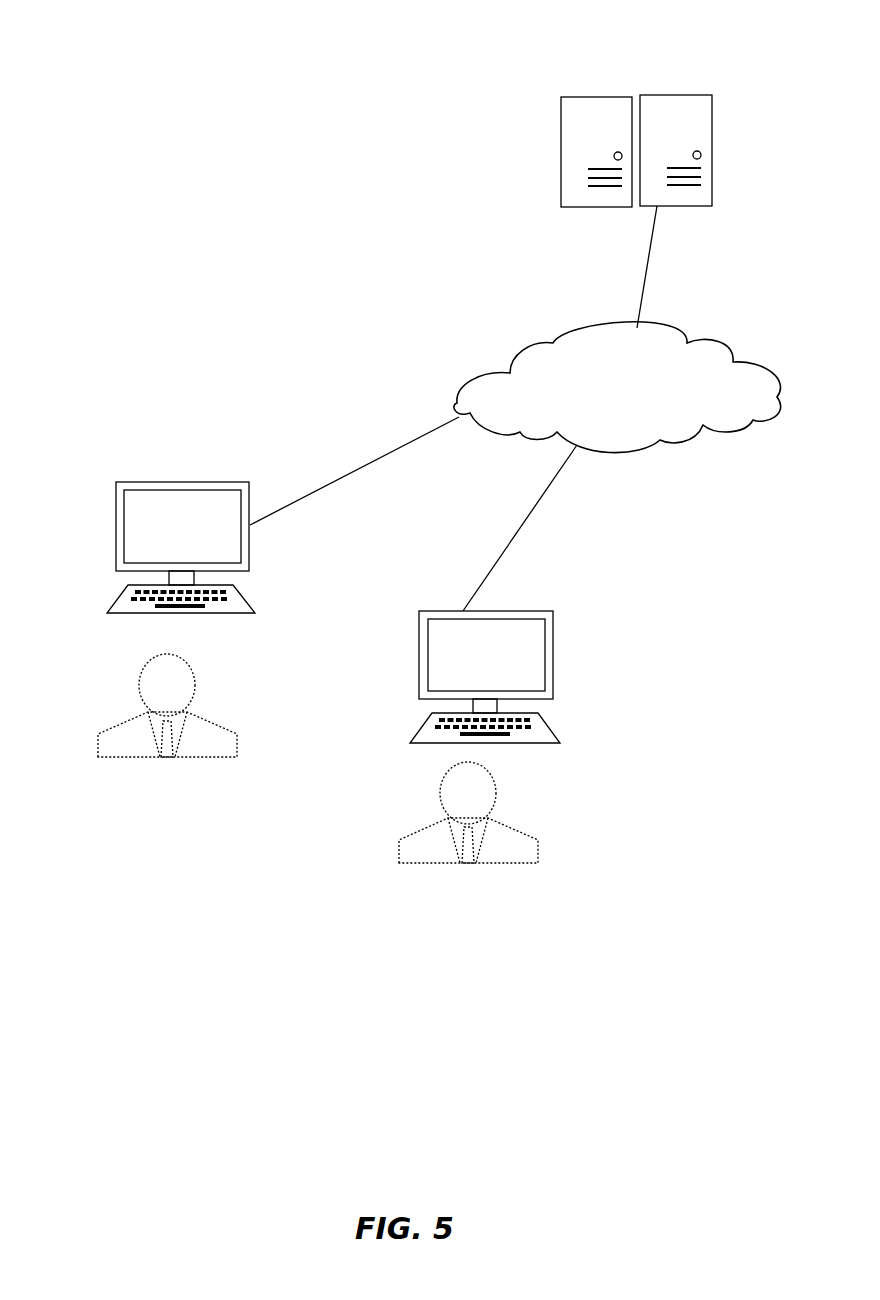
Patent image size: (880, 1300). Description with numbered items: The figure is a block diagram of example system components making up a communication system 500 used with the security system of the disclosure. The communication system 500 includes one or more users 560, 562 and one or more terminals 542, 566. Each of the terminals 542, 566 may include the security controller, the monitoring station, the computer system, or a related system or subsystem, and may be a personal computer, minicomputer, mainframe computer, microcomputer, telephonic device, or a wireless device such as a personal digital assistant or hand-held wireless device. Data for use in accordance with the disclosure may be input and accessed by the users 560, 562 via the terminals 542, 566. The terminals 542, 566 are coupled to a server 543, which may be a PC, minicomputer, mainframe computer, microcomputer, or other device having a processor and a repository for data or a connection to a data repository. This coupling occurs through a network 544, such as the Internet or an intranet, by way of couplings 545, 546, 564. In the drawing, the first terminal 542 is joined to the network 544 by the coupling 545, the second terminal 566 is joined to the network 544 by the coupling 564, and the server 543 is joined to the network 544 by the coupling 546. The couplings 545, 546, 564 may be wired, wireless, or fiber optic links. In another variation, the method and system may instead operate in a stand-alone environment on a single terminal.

The communication system 500 is at (137, 62).
The server 543 is at (697, 95).
The coupling 546 is at (643, 287).
The network 544 is at (553, 343).
The coupling 545 is at (370, 463).
The terminal 542 is at (118, 481).
The user 560 is at (130, 715).
The coupling 564 is at (542, 498).
The terminal 566 is at (553, 631).
The user 562 is at (517, 826).